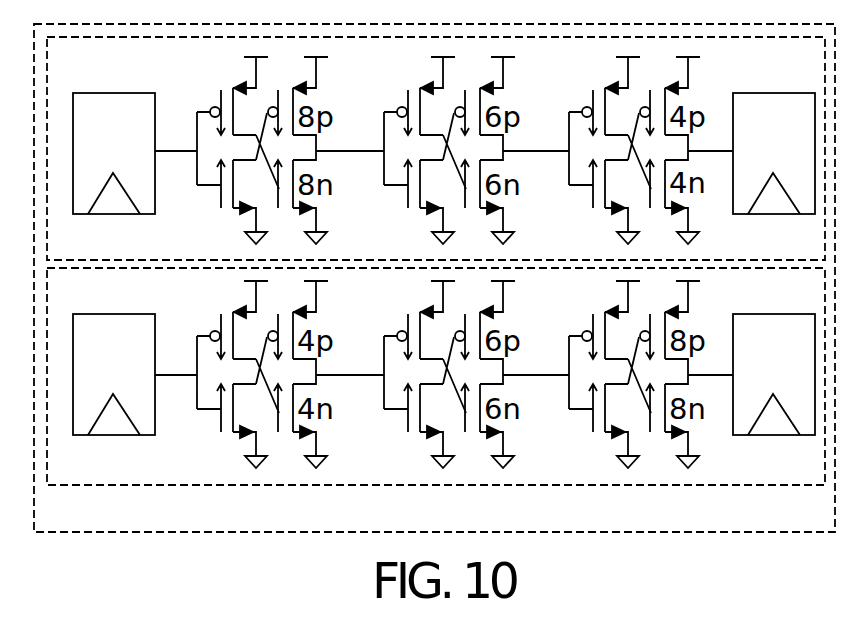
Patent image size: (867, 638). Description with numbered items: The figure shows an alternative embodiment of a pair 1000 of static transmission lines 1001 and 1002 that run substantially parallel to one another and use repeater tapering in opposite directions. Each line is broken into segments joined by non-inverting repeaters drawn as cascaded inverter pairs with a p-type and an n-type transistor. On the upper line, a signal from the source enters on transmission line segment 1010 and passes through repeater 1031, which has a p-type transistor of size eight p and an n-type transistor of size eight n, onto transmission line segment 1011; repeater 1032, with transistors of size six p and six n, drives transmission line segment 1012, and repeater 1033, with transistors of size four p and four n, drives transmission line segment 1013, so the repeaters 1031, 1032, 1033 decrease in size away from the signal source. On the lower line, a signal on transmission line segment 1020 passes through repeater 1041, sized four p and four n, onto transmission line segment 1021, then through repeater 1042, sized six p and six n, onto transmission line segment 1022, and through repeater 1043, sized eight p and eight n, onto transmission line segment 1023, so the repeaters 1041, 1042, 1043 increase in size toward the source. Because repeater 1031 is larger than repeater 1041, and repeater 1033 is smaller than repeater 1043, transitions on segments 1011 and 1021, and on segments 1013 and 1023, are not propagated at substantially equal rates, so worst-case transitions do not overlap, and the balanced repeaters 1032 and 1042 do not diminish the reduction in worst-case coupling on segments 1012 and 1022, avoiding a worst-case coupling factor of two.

The pair of static transmission lines 1000 is at (118, 522).
The static transmission line 1001 is at (120, 77).
The static transmission line 1002 is at (817, 472).
The transmission line segment 1010 is at (184, 107).
The transmission line segment 1011 is at (358, 106).
The transmission line segment 1012 is at (542, 107).
The transmission line segment 1013 is at (726, 107).
The transmission line segment 1020 is at (187, 330).
The transmission line segment 1021 is at (359, 330).
The transmission line segment 1022 is at (545, 330).
The transmission line segment 1023 is at (726, 328).
The repeater 1031 is at (237, 158).
The repeater 1032 is at (426, 158).
The repeater 1033 is at (611, 157).
The repeater 1041 is at (240, 381).
The repeater 1042 is at (427, 382).
The repeater 1043 is at (612, 382).